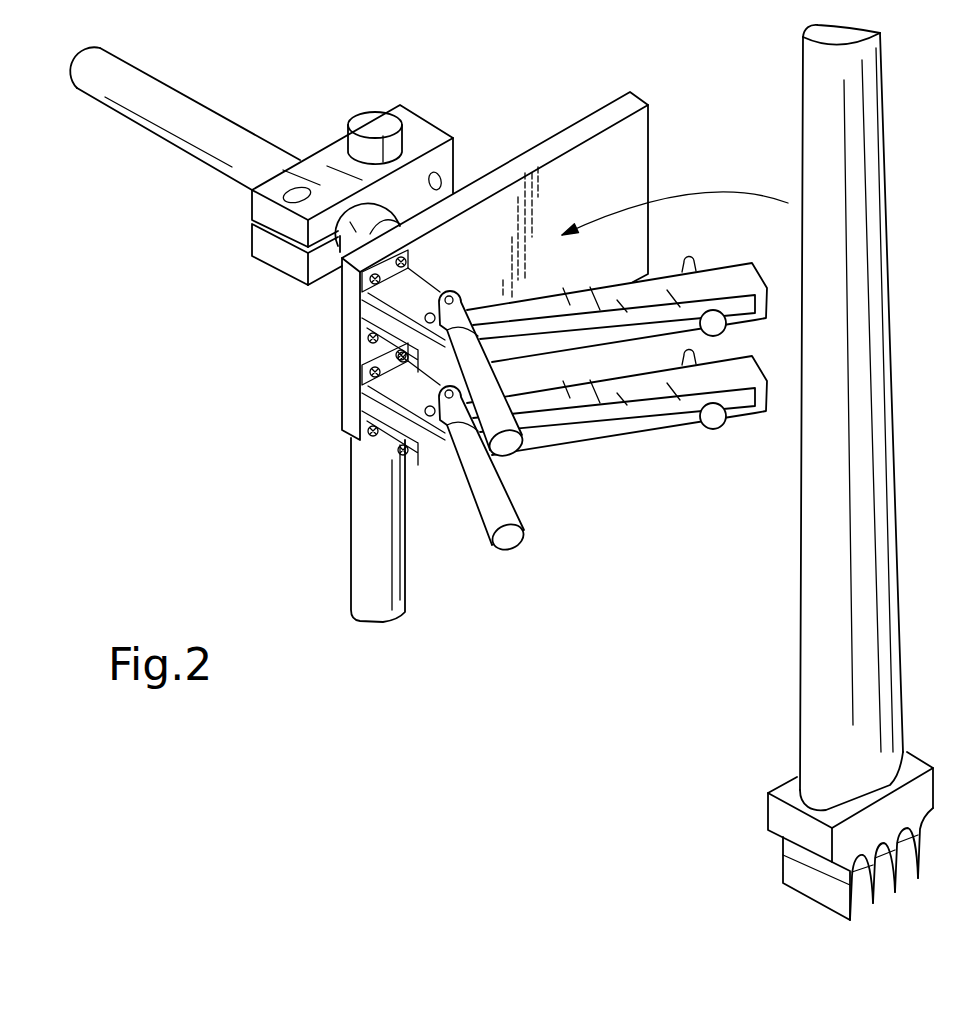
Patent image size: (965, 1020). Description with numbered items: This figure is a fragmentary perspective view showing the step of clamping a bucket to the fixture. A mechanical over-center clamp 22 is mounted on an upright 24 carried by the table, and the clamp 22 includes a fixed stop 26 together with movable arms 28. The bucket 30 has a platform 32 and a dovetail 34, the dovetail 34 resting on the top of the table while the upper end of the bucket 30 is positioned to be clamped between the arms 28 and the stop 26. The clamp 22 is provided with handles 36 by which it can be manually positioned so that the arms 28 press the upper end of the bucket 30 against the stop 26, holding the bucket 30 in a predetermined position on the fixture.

The over-center clamp 22 is at (363, 312).
The upright 24 is at (350, 507).
The stop 26 is at (562, 177).
The movable arms 28 is at (619, 408).
The bucket 30 is at (828, 255).
The platform 32 is at (787, 792).
The dovetail 34 is at (787, 867).
The handles 36 is at (480, 502).